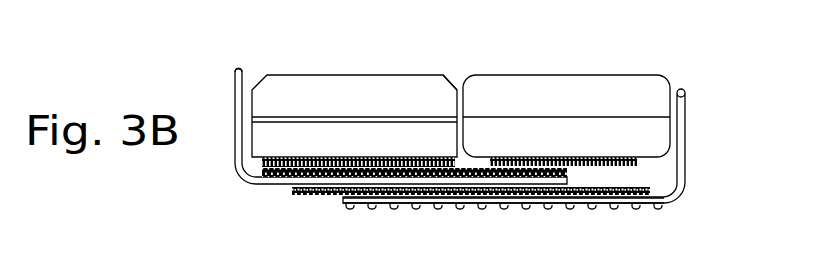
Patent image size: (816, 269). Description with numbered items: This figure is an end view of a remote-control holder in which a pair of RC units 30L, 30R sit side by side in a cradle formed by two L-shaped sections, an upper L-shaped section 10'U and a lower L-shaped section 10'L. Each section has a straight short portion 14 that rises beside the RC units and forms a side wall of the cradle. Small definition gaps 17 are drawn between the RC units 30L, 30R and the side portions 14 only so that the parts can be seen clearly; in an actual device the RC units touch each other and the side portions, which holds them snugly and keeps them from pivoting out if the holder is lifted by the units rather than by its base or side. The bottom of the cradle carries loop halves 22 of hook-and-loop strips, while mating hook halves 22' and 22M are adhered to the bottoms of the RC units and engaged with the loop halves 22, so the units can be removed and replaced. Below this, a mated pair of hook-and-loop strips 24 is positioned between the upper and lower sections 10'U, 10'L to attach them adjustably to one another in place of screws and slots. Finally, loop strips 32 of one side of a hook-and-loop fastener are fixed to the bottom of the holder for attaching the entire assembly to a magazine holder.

The short portion 14 is at (462, 140).
The definition gap 17 is at (250, 75).
The upper L-shaped section 10'U is at (356, 145).
The lower L-shaped section 10'L is at (561, 148).
The left RC unit 30L is at (308, 95).
The right RC unit 30R is at (572, 83).
The hook half 22' is at (358, 97).
The hook half 22M is at (632, 166).
The loop half 22 is at (410, 202).
The hook-and-loop strip 24 is at (340, 190).
The loop strip 32 is at (478, 207).